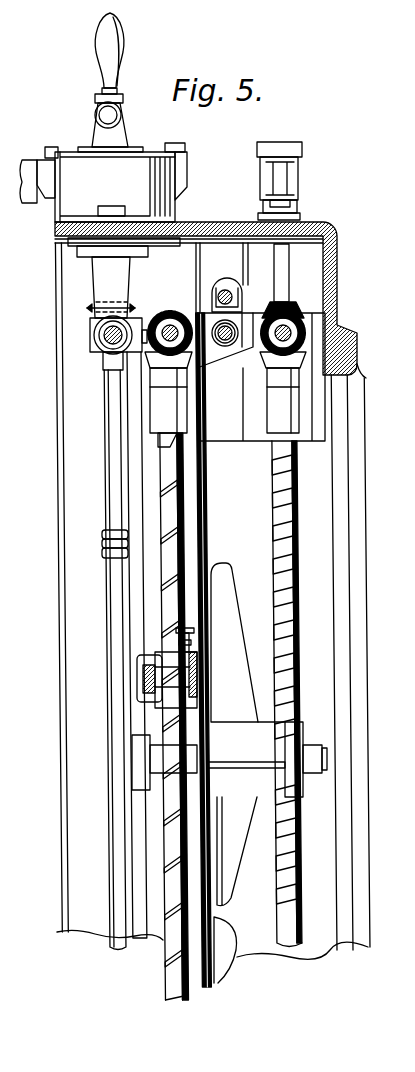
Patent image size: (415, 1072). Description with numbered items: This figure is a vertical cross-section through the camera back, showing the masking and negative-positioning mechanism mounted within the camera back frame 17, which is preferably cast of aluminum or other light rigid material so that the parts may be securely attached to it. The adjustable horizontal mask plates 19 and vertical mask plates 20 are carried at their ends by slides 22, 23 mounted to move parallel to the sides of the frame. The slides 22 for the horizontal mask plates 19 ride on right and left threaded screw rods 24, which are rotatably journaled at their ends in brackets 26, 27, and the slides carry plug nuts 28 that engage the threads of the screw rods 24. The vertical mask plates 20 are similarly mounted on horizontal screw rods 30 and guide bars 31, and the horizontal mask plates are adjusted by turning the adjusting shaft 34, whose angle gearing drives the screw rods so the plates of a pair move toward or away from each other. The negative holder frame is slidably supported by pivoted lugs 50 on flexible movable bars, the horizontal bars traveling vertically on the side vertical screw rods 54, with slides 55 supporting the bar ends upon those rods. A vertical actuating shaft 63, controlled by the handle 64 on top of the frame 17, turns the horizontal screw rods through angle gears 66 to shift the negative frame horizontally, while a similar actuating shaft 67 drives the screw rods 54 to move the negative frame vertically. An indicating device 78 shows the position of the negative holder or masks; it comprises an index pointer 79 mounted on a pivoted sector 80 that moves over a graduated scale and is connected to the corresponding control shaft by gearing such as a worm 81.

The camera back frame 17 is at (336, 232).
The horizontal mask plate 19 is at (207, 732).
The vertical mask plate 20 is at (202, 487).
The slide 22 is at (230, 650).
The slide 23 is at (200, 312).
The right and left threaded screw rod 24 is at (277, 543).
The bracket 26 is at (307, 345).
The bracket 27 is at (182, 722).
The plug nut 28 is at (328, 762).
The horizontal screw rod 30 is at (238, 312).
The guide bar 31 is at (227, 290).
The adjusting shaft 34 is at (295, 317).
The pivoted lug 50 is at (143, 680).
The side vertical screw rod 54 is at (163, 507).
The slide 55 is at (97, 300).
The vertical actuating shaft 63 is at (113, 596).
The handle 64 is at (118, 50).
The angle gear 66 is at (94, 333).
The actuating shaft 67 is at (167, 302).
The indicating device 78 is at (300, 170).
The index pointer 79 is at (302, 150).
The pivoted sector 80 is at (285, 273).
The worm 81 is at (102, 547).